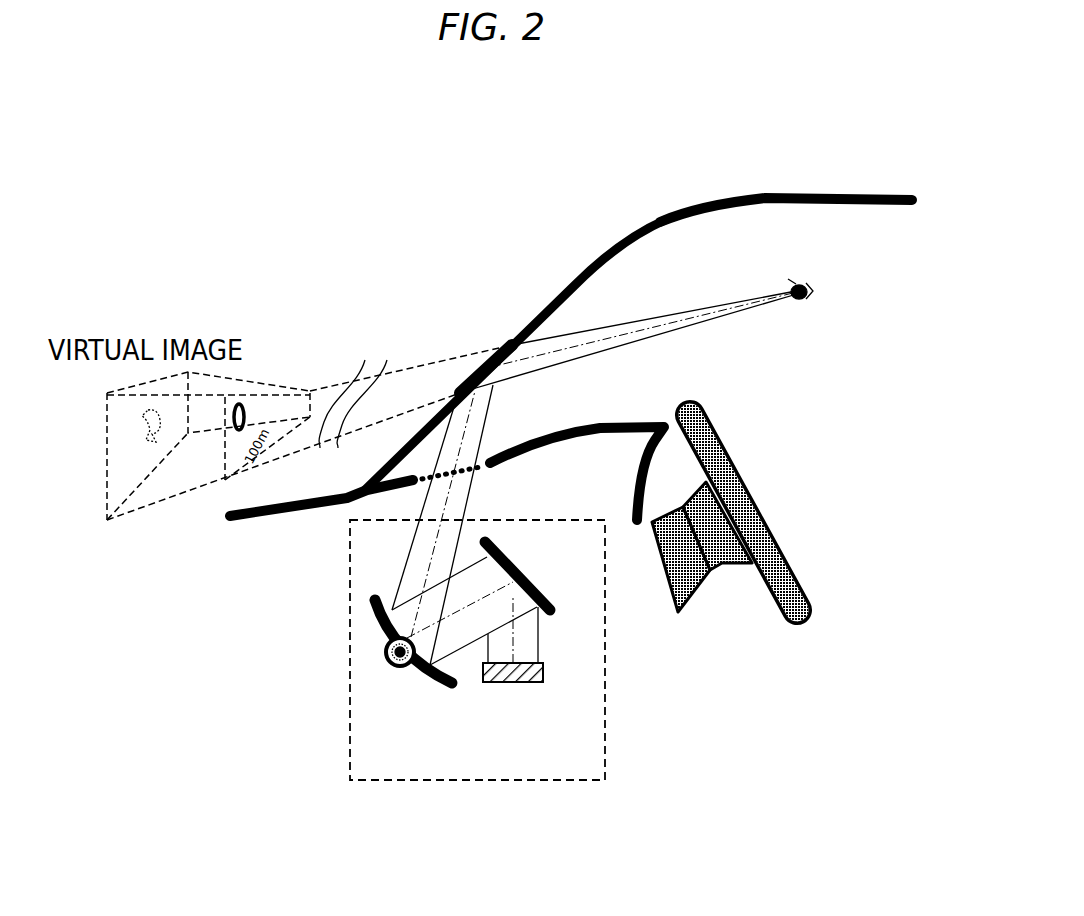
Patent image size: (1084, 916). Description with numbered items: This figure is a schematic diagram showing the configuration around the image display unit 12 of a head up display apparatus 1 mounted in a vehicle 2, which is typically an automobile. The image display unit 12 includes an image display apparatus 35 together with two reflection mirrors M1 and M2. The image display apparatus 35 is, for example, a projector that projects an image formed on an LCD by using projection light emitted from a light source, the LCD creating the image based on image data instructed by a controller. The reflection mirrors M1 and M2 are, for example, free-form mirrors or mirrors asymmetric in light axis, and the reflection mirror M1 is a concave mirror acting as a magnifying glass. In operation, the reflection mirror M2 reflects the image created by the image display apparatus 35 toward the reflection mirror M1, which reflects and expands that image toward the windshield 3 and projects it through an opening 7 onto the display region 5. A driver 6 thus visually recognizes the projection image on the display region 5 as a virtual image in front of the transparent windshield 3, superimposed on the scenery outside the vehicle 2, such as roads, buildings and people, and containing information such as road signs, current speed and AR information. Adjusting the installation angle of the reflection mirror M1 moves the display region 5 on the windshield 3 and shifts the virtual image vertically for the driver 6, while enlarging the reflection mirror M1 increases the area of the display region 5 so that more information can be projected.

The head up display apparatus 1 is at (655, 709).
The vehicle 2 is at (798, 195).
The windshield 3 is at (588, 263).
The display region 5 is at (477, 370).
The driver 6 is at (807, 303).
The opening 7 is at (487, 446).
The image display unit 12 is at (345, 630).
The reflection mirror M1 is at (422, 680).
The reflection mirror M2 is at (535, 578).
The image display apparatus 35 is at (512, 685).